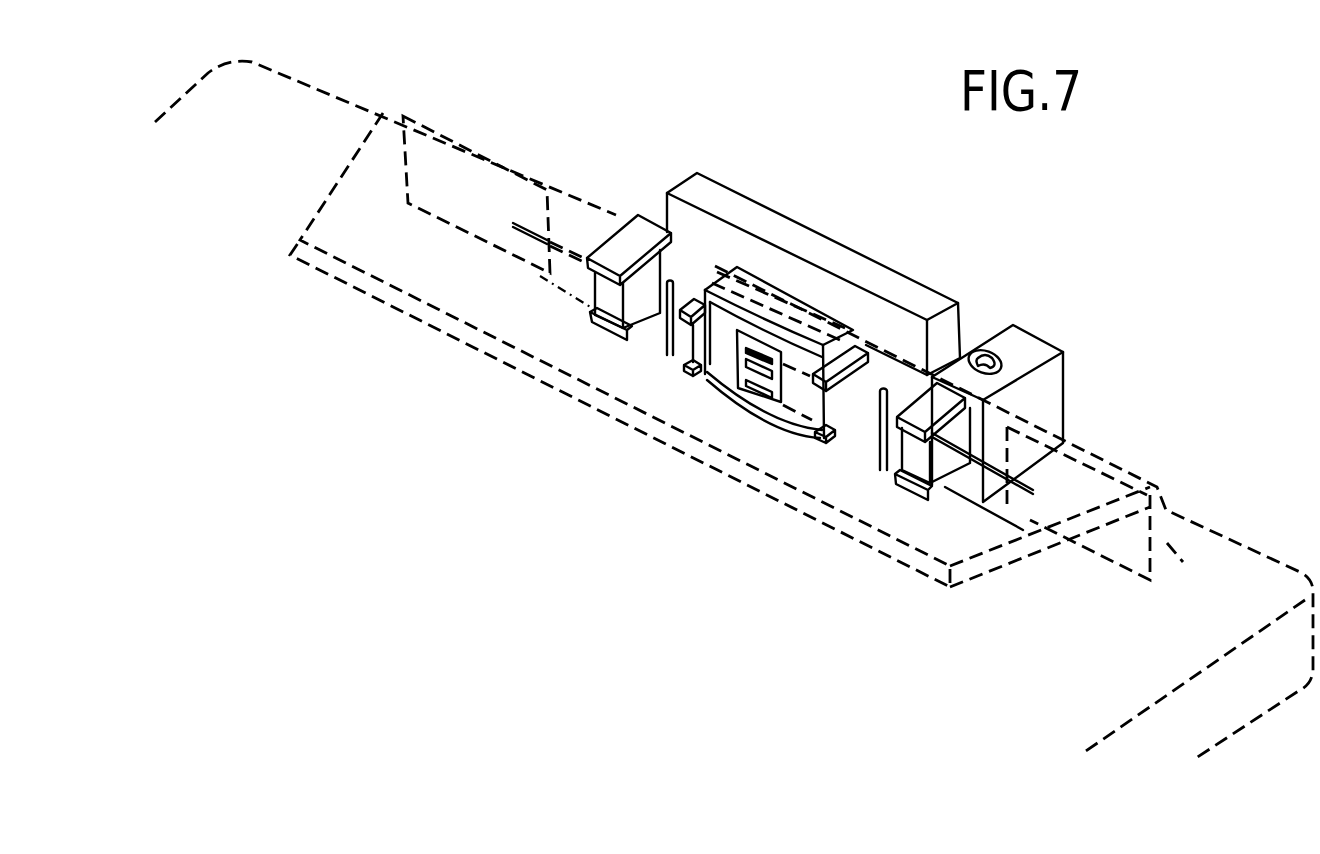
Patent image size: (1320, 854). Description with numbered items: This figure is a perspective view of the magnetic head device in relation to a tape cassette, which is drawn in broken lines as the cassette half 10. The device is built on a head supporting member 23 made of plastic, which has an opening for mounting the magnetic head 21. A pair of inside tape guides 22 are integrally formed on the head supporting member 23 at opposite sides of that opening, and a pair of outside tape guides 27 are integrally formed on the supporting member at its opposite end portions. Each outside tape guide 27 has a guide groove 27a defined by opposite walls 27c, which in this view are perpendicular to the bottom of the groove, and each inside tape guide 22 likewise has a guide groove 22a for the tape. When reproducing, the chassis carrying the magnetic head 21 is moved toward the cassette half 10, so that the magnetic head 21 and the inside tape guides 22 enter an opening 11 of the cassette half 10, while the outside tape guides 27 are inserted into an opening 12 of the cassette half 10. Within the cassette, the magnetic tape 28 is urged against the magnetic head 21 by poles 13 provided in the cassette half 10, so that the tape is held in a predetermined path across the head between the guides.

The cassette half 10 is at (379, 112).
The opening 11 is at (703, 292).
The opening 12 is at (642, 300).
The poles 13 is at (668, 278).
The magnetic head 21 is at (767, 318).
The inside tape guides 22 is at (687, 303).
The guide groove 22a is at (693, 377).
The head supporting member 23 is at (877, 267).
The outside tape guide 27 is at (597, 257).
The guide groove 27a is at (622, 338).
The walls 27c is at (597, 327).
The magnetic tape 28 is at (544, 290).